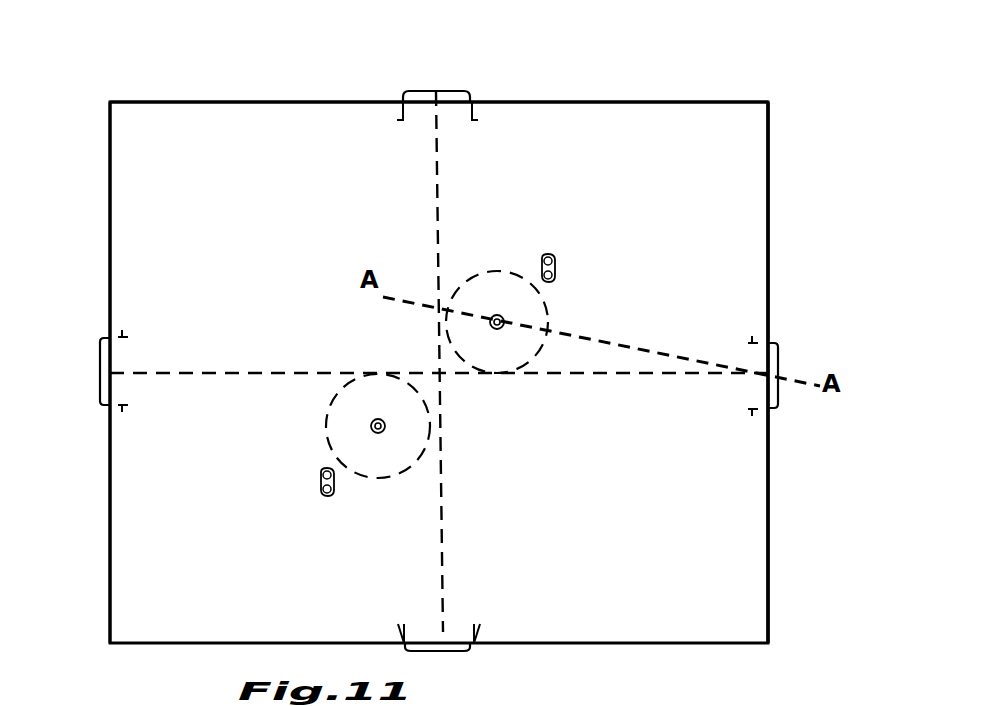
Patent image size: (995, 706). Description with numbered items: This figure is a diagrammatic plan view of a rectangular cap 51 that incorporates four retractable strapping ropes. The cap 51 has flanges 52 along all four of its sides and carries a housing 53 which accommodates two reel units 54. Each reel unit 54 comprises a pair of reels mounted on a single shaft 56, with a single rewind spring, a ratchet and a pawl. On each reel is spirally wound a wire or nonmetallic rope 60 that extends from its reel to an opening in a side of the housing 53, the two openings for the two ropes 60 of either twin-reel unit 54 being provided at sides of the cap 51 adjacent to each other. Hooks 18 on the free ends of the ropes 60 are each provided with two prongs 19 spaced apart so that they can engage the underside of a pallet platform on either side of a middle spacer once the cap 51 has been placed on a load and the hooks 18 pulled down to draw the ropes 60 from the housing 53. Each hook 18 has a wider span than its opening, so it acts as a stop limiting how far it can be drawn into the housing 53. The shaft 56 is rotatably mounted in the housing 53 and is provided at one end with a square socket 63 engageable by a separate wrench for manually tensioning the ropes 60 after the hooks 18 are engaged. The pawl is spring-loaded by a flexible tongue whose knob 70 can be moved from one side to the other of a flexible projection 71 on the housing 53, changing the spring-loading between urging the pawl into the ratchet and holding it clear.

The rectangular cap 51 is at (181, 135).
The flanges 52 is at (244, 101).
The housing 53 is at (735, 196).
The hooks 18 is at (416, 91).
The prongs 19 is at (400, 113).
The rope 60 is at (434, 170).
The reel units 54 is at (500, 260).
The shaft 56 is at (548, 332).
The square socket 63 is at (500, 324).
The knob 70 is at (558, 268).
The flexible projection 71 is at (556, 275).